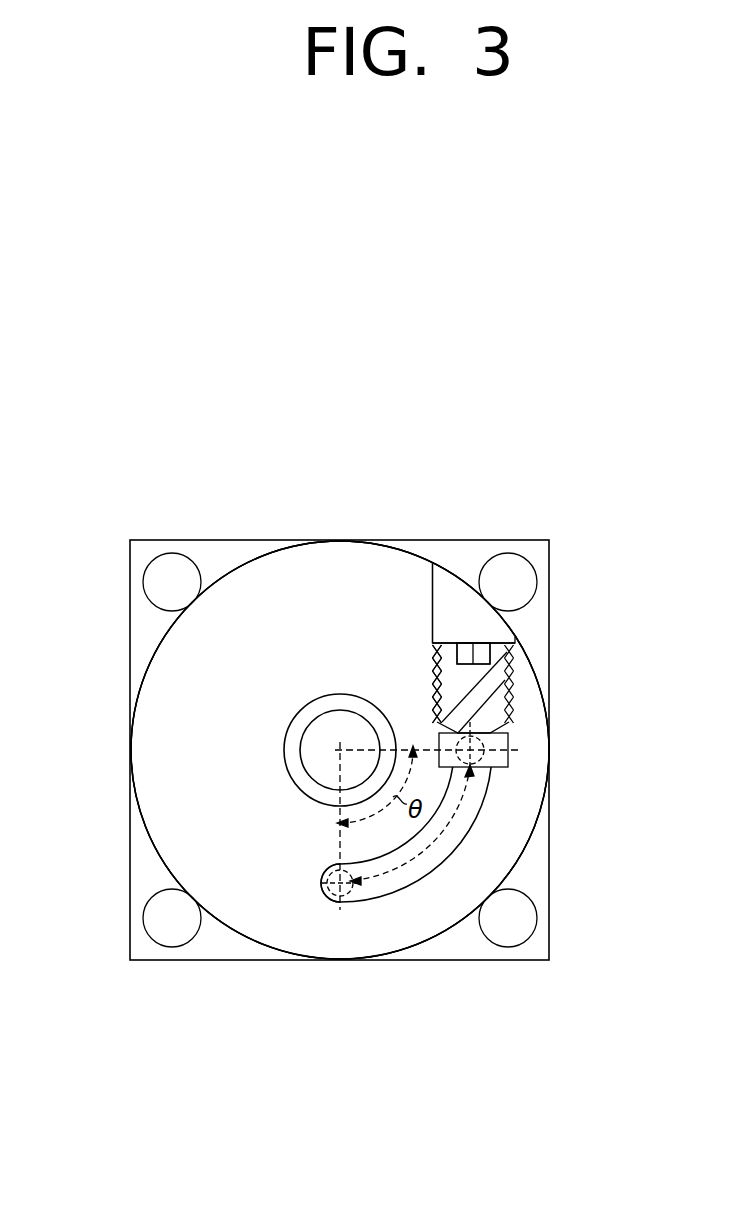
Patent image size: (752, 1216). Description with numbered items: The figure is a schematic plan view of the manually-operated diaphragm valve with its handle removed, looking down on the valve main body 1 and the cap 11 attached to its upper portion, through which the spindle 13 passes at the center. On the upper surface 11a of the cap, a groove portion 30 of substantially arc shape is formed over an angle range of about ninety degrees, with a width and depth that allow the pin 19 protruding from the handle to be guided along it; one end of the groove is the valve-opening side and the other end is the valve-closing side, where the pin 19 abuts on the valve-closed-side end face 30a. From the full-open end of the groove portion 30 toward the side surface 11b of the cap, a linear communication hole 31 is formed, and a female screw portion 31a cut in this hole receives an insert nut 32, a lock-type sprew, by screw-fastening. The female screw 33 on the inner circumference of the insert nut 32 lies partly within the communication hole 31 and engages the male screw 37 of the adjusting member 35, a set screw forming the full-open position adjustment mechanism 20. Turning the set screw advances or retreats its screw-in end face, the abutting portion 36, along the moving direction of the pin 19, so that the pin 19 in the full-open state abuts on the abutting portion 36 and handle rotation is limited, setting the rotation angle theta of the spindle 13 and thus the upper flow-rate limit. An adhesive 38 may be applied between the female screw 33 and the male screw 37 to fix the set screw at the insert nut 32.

The valve main body 1 is at (122, 827).
The cap 11 is at (200, 750).
The upper surface of the cap 11a is at (362, 587).
The side surface of the cap 11b is at (233, 931).
The spindle 13 is at (325, 732).
The pin 19 is at (520, 750).
The full-open position adjustment mechanism 20 is at (500, 640).
The groove portion 30 is at (460, 810).
The valve-closed-side end face 30a is at (337, 901).
The communication hole 31 is at (433, 598).
The female screw portion 31a is at (514, 680).
The insert nut 32 is at (490, 660).
The female screw 33 is at (496, 703).
The adjusting member 35 is at (433, 680).
The abutting portion 36 is at (506, 765).
The male screw 37 is at (432, 672).
The adhesive 38 is at (456, 643).